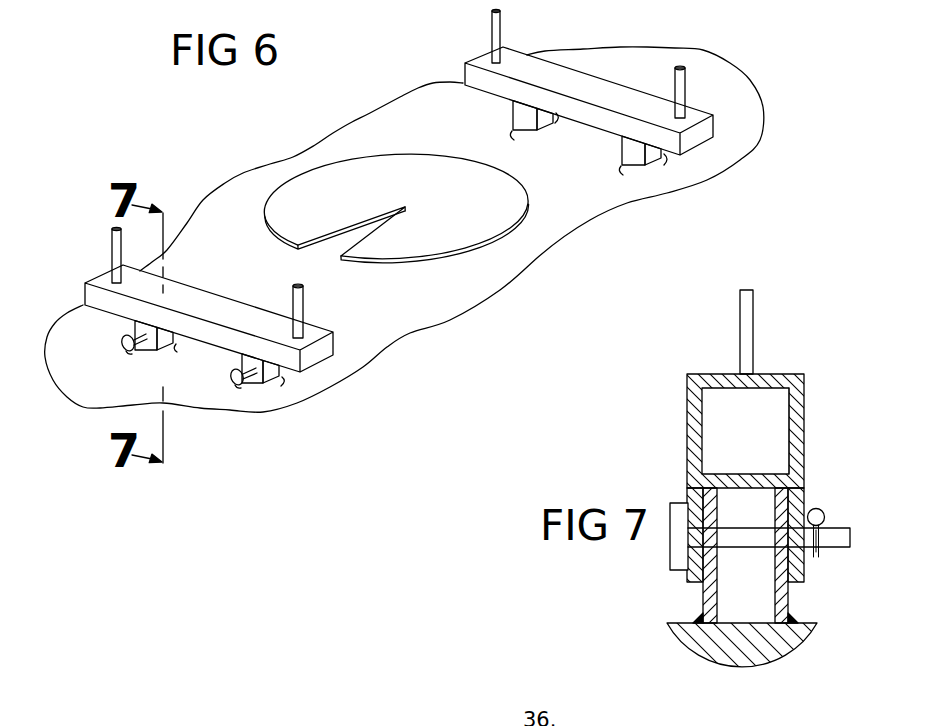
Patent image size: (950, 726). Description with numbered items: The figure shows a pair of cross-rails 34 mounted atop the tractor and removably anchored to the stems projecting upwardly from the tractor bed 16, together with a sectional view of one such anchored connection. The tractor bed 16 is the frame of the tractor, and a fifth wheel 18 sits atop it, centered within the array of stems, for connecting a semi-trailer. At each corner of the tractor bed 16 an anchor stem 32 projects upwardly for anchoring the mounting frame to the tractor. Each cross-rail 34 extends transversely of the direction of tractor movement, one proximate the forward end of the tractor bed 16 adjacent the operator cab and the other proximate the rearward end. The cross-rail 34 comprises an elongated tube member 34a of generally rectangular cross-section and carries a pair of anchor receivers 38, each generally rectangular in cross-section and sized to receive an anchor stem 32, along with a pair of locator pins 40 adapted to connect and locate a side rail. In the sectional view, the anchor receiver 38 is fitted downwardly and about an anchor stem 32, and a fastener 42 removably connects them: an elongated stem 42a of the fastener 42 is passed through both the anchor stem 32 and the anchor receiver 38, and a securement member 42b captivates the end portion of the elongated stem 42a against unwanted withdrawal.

In FIG. 6, the tractor bed 16 is at (480, 280).
In FIG. 7, the tractor bed 16 is at (693, 643).
In FIG. 6, the fifth wheel 18 is at (520, 205).
In FIG. 6, the anchor stem 32 is at (652, 163).
In FIG. 7, the anchor stem 32 is at (707, 590).
In FIG. 6, the cross-rail 34 is at (620, 62).
In FIG. 7, the cross-rail 34 is at (676, 412).
In FIG. 7, the elongated tube member 34a is at (795, 428).
In FIG. 6, the anchor receiver 38 is at (518, 118).
In FIG. 7, the anchor receiver 38 is at (693, 497).
In FIG. 6, the locator pin 40 is at (495, 30).
In FIG. 7, the locator pin 40 is at (747, 330).
In FIG. 6, the fastener 42 is at (124, 341).
In FIG. 7, the fastener 42 is at (676, 555).
In FIG. 7, the elongated stem 42a is at (828, 550).
In FIG. 7, the securement member 42b is at (817, 508).